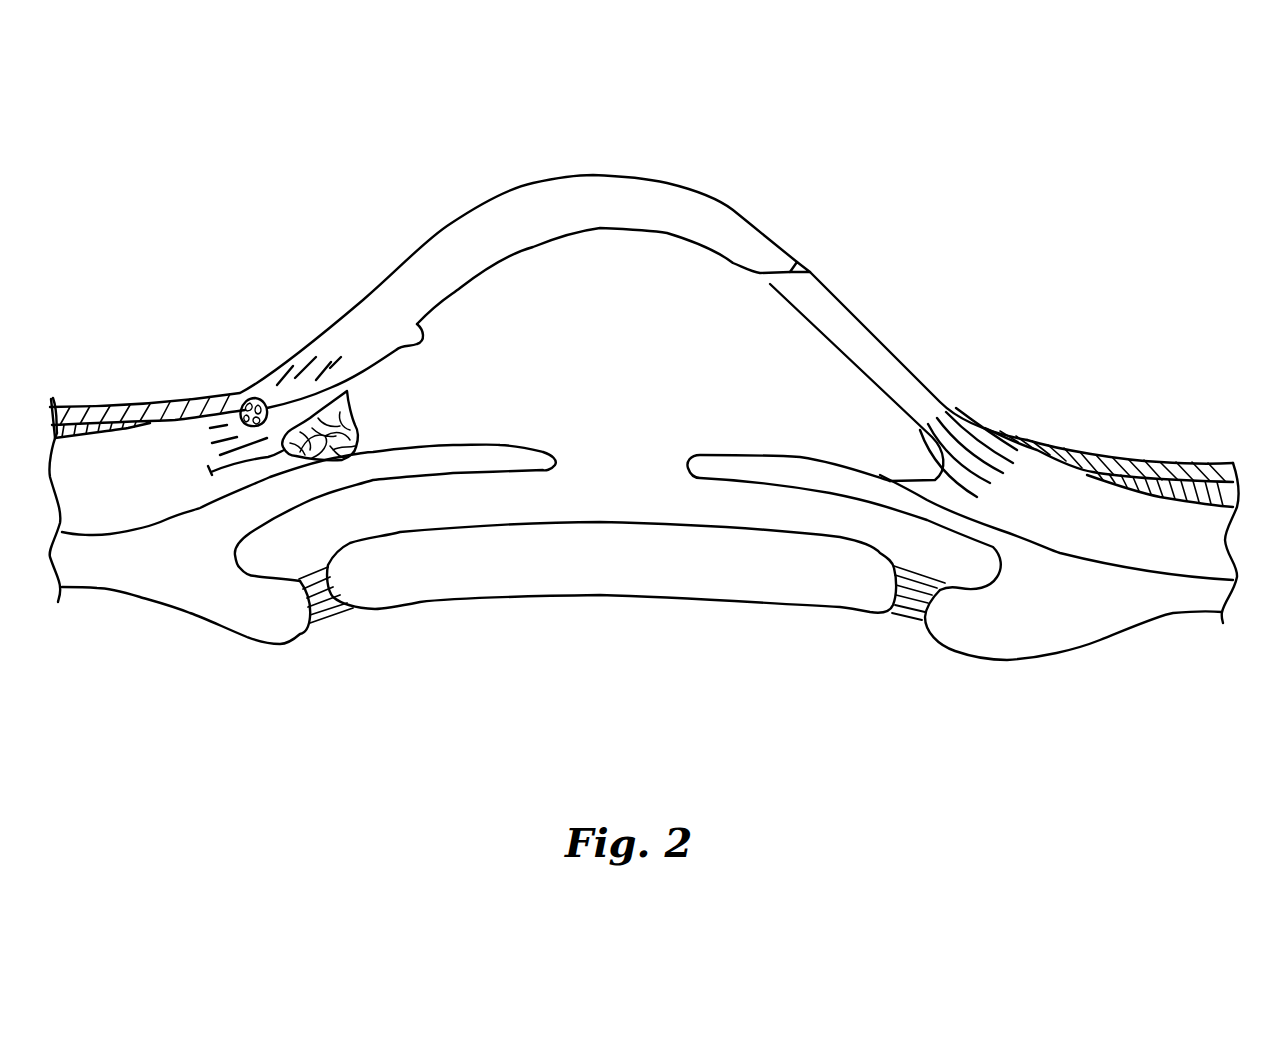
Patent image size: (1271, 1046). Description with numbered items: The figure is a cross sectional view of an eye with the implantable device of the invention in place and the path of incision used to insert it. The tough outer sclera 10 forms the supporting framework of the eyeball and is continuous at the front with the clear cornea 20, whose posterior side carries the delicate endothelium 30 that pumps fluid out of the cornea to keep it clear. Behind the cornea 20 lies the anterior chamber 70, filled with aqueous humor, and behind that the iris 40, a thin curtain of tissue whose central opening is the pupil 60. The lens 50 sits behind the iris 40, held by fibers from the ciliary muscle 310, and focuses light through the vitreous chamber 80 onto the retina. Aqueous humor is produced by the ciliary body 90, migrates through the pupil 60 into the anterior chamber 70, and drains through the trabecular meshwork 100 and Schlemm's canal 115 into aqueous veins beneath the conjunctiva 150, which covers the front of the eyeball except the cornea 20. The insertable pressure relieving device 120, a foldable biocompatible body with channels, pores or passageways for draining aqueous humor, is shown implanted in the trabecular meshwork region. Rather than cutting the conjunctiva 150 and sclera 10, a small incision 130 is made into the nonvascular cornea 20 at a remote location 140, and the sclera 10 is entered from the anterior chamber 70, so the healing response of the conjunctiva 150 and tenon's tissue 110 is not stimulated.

The sclera 10 is at (1022, 493).
The cornea 20 is at (451, 228).
The endothelium 30 is at (392, 343).
The iris 40 is at (720, 471).
The lens 50 is at (578, 578).
The pupil 60 is at (613, 463).
The anterior chamber 70 is at (650, 258).
The vitreous chamber 80 is at (598, 715).
The ciliary body 90 is at (977, 628).
The trabecular meshwork 100 is at (358, 432).
The tenon's tissue 110 is at (1198, 494).
The Schlemm's canal 115 is at (183, 413).
The insertable pressure relieving device 120 is at (251, 402).
The incision 130 is at (793, 268).
The remote location 140 is at (811, 272).
The conjunctiva 150 is at (1077, 456).
The ciliary muscle 310 is at (1118, 600).